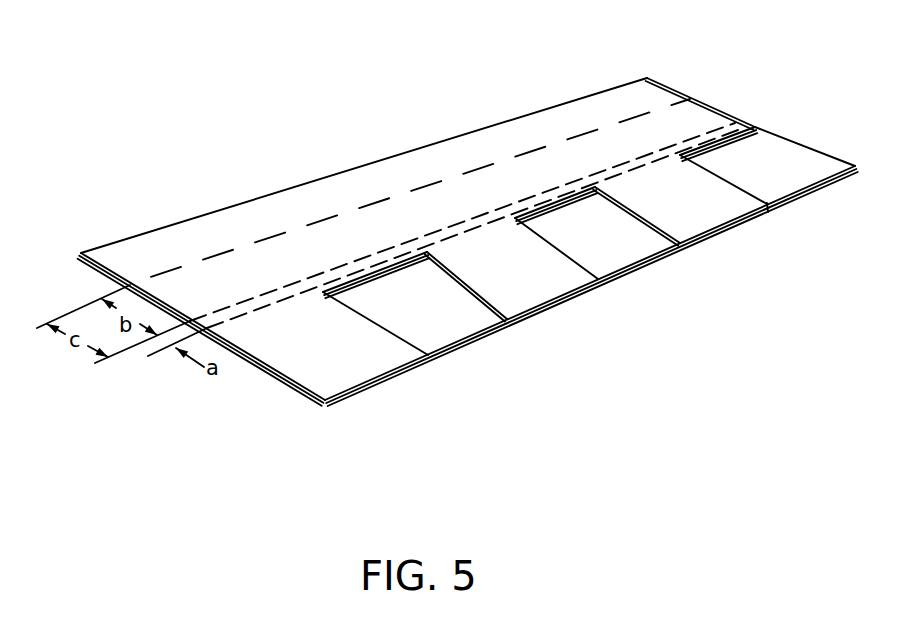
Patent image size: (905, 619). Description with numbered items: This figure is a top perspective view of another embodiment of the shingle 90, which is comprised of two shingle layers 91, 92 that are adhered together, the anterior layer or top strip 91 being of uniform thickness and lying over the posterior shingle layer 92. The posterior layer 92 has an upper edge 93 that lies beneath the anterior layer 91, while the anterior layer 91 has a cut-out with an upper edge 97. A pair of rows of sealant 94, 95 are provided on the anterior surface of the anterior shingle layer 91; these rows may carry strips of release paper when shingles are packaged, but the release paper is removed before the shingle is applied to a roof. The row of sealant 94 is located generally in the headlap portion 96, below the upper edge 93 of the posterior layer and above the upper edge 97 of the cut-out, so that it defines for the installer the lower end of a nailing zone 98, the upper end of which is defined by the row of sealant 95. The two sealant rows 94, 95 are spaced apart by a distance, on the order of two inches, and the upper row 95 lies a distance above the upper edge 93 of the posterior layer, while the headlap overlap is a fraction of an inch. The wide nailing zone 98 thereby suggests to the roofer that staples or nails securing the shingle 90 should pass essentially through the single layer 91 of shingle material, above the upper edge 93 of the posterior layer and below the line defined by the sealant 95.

The shingle 90 is at (654, 90).
The anterior shingle layer 91 is at (700, 116).
The posterior shingle layer 92 is at (771, 167).
The upper edge of the posterior shingle layer 93 is at (410, 248).
The row of sealant 94 is at (297, 293).
The row of sealant 95 is at (209, 258).
The headlap portion 96 is at (491, 187).
The upper edge of the cut-out 97 is at (561, 203).
The nailing zone 98 is at (311, 250).